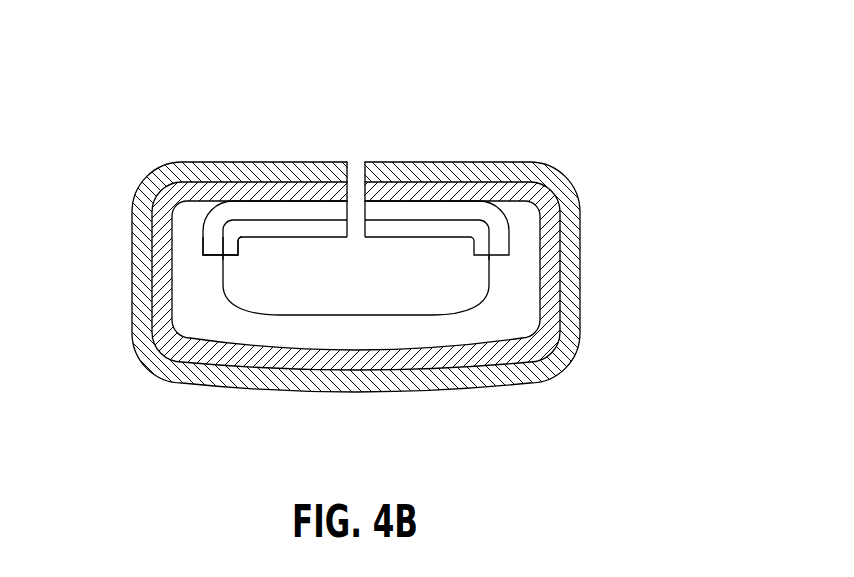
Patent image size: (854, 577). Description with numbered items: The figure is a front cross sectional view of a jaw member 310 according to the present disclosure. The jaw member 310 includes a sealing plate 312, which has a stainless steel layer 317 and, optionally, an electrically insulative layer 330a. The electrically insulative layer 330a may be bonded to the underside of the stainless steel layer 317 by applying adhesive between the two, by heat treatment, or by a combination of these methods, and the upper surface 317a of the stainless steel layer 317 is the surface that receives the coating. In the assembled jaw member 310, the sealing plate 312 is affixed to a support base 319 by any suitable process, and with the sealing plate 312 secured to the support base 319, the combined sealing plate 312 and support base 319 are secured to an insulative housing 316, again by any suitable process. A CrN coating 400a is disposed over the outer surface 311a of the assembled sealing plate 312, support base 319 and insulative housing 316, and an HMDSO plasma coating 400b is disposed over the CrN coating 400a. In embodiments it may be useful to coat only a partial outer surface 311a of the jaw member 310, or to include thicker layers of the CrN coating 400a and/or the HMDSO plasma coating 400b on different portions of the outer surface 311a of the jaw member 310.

The jaw member 310 is at (359, 244).
The outer surface 311a is at (398, 269).
The sealing plate 312 is at (497, 221).
The insulative housing 316 is at (405, 337).
The stainless steel layer 317 is at (359, 205).
The upper surface 317a is at (508, 237).
The support base 319 is at (300, 283).
The electrically insulative layer 330a is at (237, 242).
The CrN coating 400a is at (513, 188).
The HMDSO plasma coating 400b is at (420, 160).